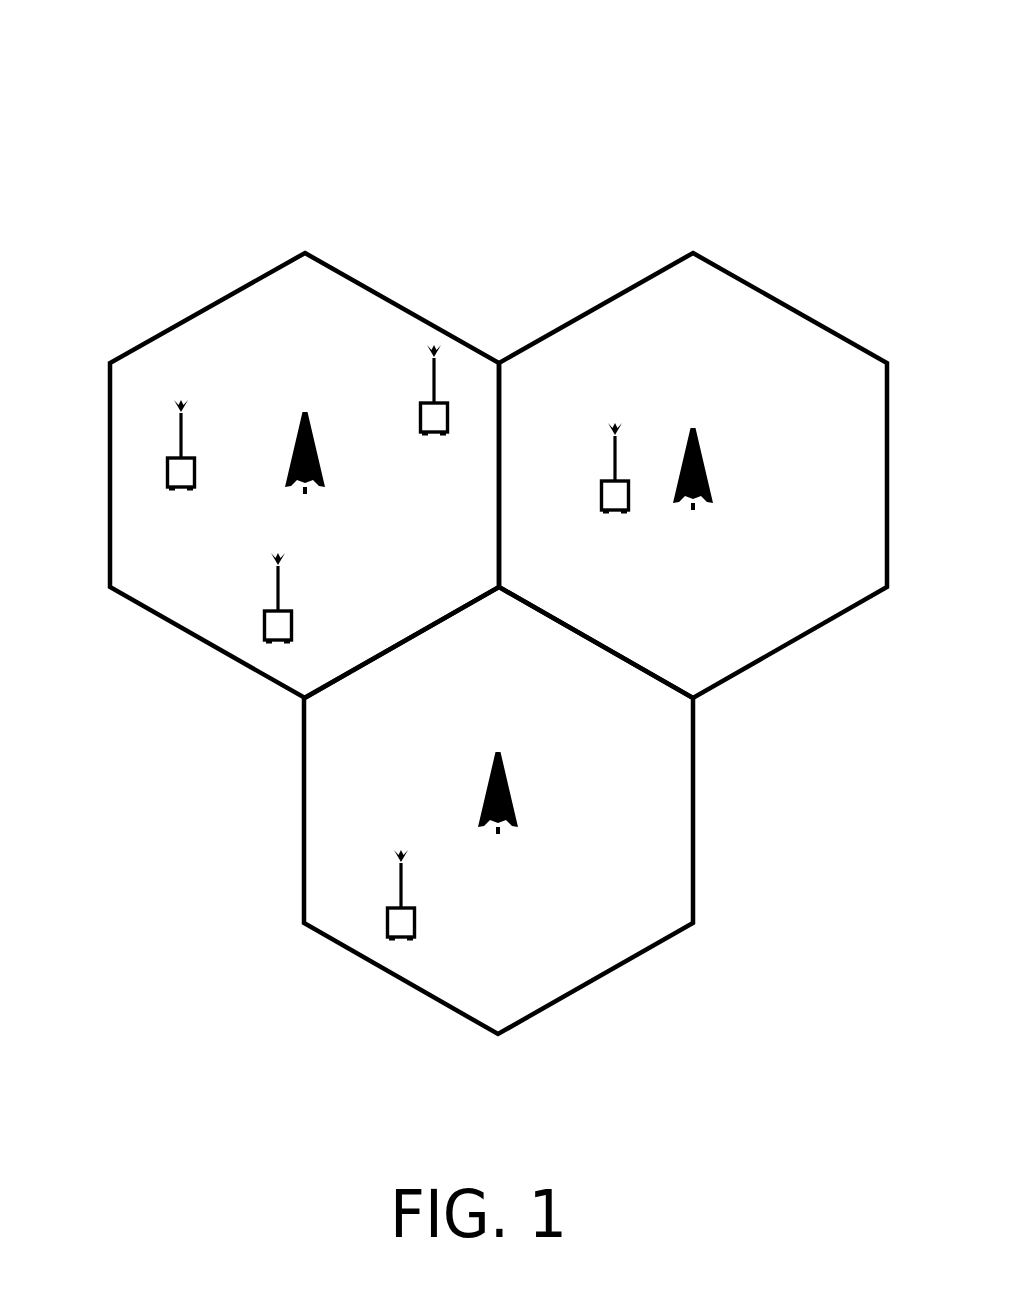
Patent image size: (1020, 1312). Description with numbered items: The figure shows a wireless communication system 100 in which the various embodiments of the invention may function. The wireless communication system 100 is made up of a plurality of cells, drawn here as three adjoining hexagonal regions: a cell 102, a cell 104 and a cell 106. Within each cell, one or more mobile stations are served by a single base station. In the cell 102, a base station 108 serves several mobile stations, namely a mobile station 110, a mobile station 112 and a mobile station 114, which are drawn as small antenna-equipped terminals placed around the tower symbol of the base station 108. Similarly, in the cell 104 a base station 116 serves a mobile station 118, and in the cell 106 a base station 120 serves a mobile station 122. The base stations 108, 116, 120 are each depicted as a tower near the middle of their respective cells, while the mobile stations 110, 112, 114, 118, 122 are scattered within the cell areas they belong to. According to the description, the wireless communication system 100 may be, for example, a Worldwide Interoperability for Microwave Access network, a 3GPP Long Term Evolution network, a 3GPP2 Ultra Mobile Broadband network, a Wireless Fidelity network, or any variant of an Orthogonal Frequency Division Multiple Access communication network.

The wireless communication system 100 is at (298, 92).
The cell 102 is at (360, 283).
The cell 104 is at (818, 323).
The cell 106 is at (694, 813).
The base station 108 is at (309, 432).
The mobile station 110 is at (433, 418).
The mobile station 112 is at (320, 600).
The mobile station 114 is at (181, 471).
The base station 116 is at (697, 441).
The mobile station 118 is at (616, 495).
The base station 120 is at (502, 768).
The mobile station 122 is at (439, 899).